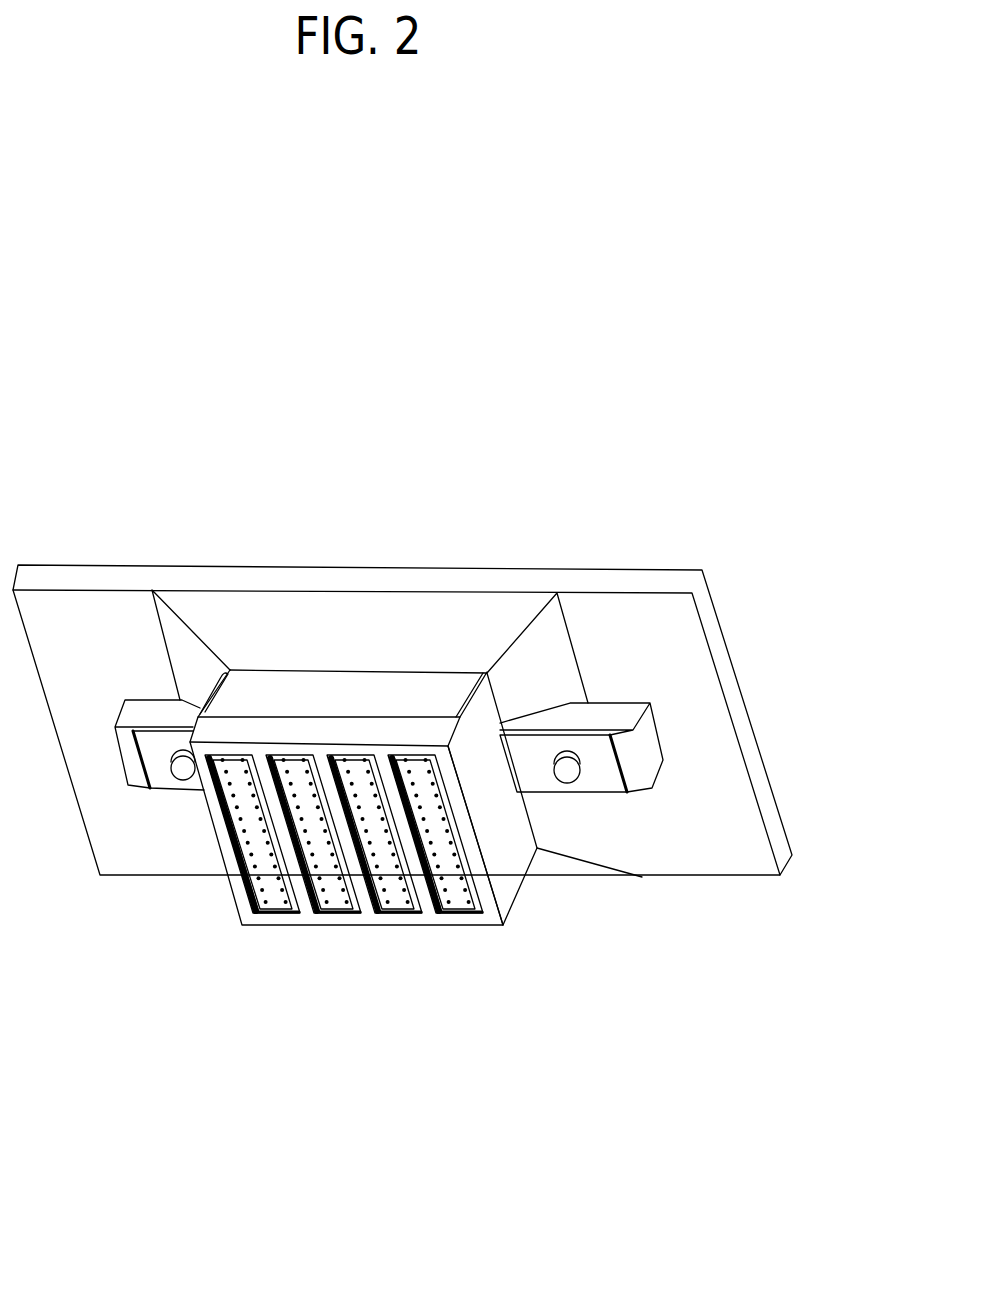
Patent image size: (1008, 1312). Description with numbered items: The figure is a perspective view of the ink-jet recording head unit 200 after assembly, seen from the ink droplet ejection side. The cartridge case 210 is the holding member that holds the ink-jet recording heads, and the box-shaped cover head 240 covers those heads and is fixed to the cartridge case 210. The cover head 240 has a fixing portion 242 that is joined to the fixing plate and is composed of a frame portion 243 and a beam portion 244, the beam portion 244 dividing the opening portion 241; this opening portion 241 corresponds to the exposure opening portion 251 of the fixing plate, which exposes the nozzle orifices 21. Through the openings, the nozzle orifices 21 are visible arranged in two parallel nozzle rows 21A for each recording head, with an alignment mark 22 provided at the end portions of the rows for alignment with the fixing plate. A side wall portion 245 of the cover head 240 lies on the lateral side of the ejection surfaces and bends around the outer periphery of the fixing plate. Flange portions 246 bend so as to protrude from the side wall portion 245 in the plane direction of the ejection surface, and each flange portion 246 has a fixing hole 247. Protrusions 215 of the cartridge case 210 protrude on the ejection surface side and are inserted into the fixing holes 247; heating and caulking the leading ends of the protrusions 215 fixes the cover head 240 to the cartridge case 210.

The ink-jet recording head unit 200 is at (677, 418).
The cartridge case 210 is at (672, 812).
The cover head 240 is at (522, 897).
The side wall portion 245 is at (337, 738).
The flange portion 246 is at (590, 748).
The opening portion 241 is at (237, 852).
The exposure opening portion 251 is at (247, 867).
The nozzle orifice 21 is at (263, 900).
The alignment mark 22 is at (282, 912).
The nozzle row 21A is at (330, 915).
The fixing portion 242 is at (543, 1072).
The frame portion 243 is at (485, 863).
The beam portion 244 is at (428, 873).
The protrusion 215 is at (563, 772).
The fixing hole 247 is at (583, 773).